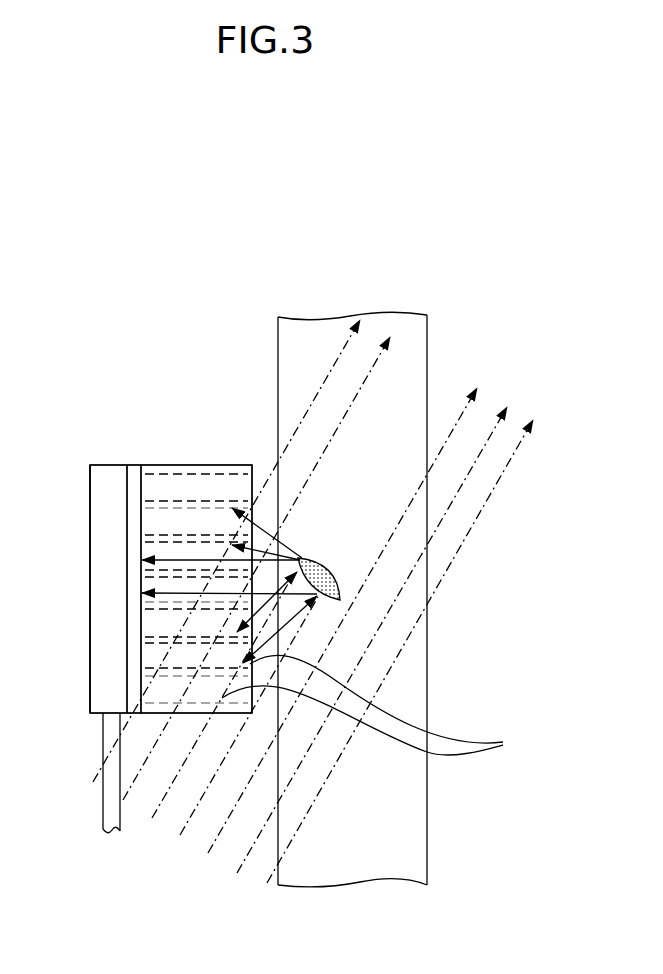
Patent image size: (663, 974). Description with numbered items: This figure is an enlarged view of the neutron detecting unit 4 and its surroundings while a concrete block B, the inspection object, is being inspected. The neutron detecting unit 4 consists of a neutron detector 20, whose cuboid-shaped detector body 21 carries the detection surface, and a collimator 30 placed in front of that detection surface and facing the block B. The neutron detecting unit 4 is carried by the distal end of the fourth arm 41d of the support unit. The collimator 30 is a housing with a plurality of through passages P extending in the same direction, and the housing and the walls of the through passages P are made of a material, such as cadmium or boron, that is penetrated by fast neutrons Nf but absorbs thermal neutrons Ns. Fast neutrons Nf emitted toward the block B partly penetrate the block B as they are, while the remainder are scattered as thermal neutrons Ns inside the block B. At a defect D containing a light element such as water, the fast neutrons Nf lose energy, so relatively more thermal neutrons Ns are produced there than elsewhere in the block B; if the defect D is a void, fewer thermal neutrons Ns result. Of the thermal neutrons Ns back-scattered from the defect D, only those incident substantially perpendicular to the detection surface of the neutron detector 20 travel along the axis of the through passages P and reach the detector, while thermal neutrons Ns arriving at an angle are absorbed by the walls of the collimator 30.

The neutron detecting unit 4 is at (95, 391).
The neutron detector 20 is at (105, 462).
The detector body 21 is at (108, 521).
The collimator 30 is at (164, 462).
The fourth arm 41d is at (103, 806).
The block B is at (427, 362).
The defect D is at (326, 571).
The thermal neutrons Ns is at (170, 562).
The fast neutrons Nf is at (397, 600).
The through passages P is at (377, 705).